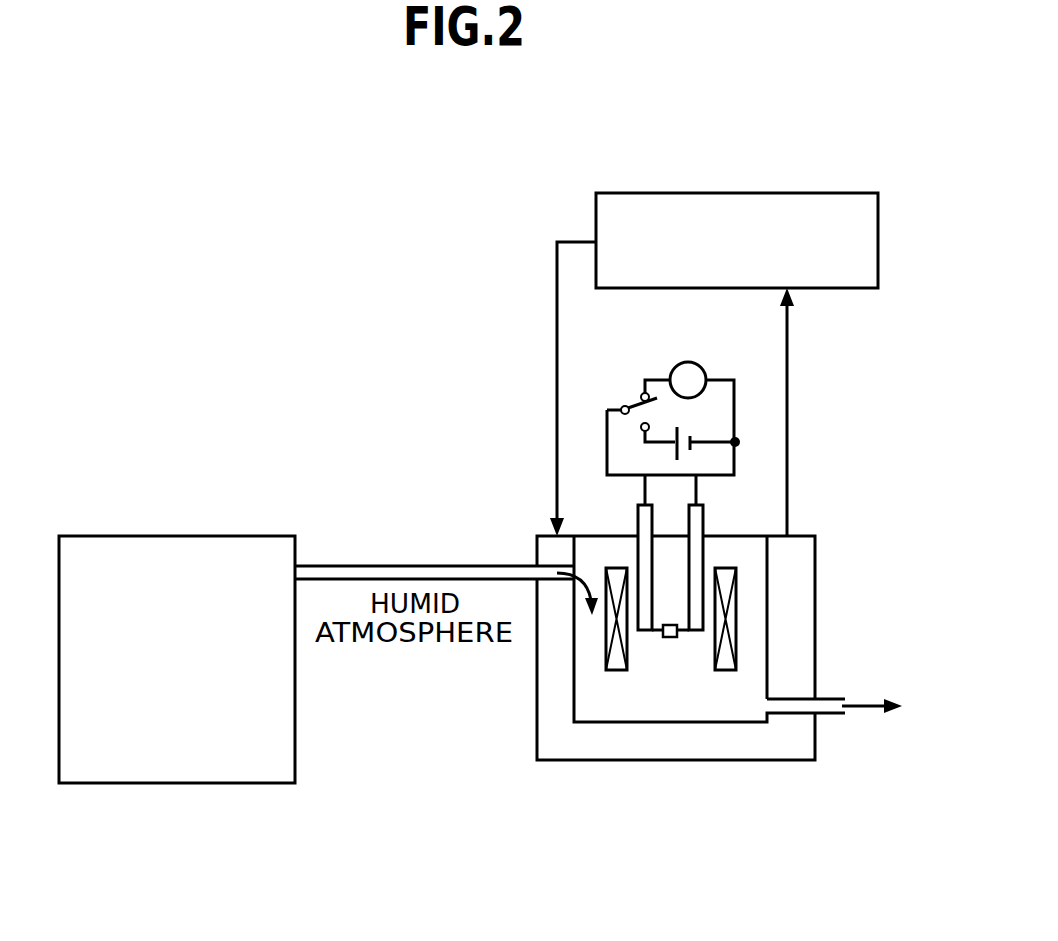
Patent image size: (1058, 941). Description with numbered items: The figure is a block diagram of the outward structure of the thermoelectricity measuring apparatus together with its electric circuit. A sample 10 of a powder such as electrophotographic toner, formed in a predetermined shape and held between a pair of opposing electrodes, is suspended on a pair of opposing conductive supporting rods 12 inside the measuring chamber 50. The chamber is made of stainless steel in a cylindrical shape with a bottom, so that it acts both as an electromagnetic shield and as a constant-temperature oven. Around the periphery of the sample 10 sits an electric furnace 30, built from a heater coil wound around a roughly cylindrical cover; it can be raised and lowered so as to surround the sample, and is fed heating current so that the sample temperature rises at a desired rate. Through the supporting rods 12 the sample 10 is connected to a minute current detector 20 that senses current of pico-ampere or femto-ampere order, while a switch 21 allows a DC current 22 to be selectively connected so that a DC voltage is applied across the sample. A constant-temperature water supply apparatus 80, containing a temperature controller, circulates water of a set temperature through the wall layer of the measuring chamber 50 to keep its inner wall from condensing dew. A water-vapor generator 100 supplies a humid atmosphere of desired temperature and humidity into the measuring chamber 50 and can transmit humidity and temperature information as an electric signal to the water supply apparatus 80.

The constant-temperature water supply apparatus 80 is at (757, 193).
The minute current detector 20 is at (705, 372).
The switch 21 is at (637, 402).
The DC current 22 is at (683, 430).
The supporting rods 12 is at (638, 528).
The sample 10 is at (672, 637).
The electric furnace 30 is at (730, 620).
The measuring chamber 50 is at (537, 735).
The water-vapor generator 100 is at (195, 535).